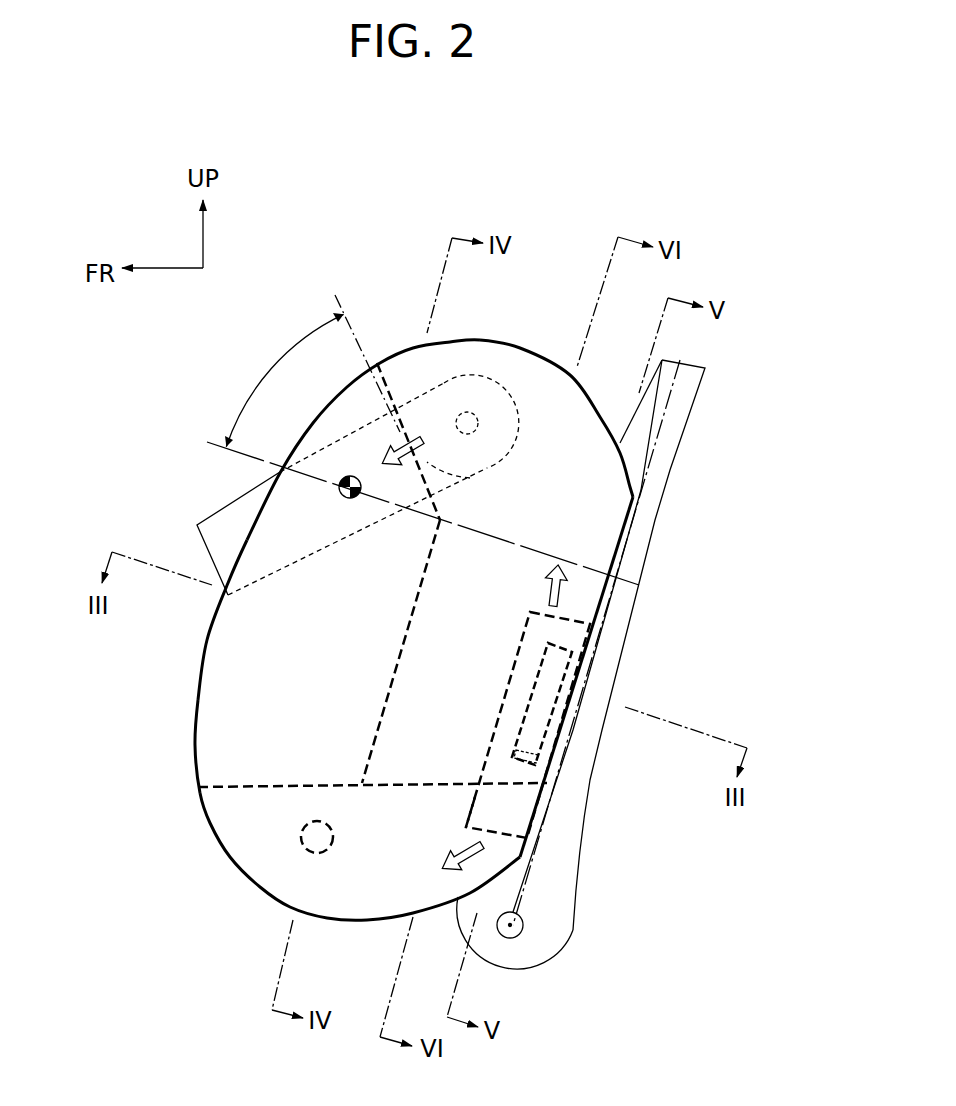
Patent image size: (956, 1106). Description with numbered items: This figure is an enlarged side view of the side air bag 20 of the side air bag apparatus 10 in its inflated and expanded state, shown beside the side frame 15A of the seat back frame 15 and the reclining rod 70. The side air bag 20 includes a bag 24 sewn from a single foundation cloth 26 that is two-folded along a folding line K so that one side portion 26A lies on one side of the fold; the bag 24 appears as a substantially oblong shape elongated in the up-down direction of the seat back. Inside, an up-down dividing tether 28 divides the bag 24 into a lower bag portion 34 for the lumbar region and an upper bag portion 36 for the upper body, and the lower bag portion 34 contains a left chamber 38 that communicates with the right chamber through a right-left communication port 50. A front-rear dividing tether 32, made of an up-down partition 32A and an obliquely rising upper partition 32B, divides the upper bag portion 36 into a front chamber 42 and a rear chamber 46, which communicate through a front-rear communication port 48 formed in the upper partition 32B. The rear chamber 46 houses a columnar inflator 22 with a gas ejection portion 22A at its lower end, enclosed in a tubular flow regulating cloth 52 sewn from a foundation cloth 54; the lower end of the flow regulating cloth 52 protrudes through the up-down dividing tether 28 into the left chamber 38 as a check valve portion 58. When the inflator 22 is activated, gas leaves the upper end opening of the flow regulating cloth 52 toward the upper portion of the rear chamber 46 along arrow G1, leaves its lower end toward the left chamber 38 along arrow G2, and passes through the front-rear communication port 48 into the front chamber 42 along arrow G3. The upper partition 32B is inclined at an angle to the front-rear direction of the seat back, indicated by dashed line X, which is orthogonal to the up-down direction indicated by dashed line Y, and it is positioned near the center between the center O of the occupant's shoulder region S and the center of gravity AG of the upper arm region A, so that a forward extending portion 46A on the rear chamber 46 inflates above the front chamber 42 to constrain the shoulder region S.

The side air bag apparatus 10 is at (307, 252).
The side air bag 20 is at (548, 340).
The inflator 22 is at (568, 713).
The gas ejection portion 22A is at (538, 753).
The bag 24 is at (555, 442).
The foundation cloth 26 is at (563, 418).
The one side portion 26A is at (207, 717).
The up-down dividing tether 28 is at (273, 783).
The front-rear dividing tether 32 is at (423, 577).
The up-down partition 32A is at (397, 653).
The upper partition 32B is at (380, 395).
The lower bag portion 34 is at (280, 880).
The upper bag portion 36 is at (227, 663).
The left chamber 38 is at (353, 893).
The front chamber 42 is at (212, 750).
The rear chamber 46 is at (585, 542).
The forward extending portion 46A is at (413, 380).
The front-rear communication port 48 is at (481, 469).
The right-left communication port 50 is at (300, 840).
The flow regulating cloth 52 is at (502, 700).
The foundation cloth 54 is at (490, 725).
The check valve portion 58 is at (465, 797).
The reclining rod 70 is at (523, 929).
The seat back frame 15 is at (626, 665).
The side frame 15A is at (678, 457).
The upper arm region A is at (193, 538).
The center of gravity AG is at (347, 497).
The dashed line X is at (253, 460).
The dashed line Y is at (668, 408).
The folding line K is at (622, 527).
The center of shoulder region O is at (470, 410).
The shoulder region S is at (500, 380).
The arrow G1 is at (549, 591).
The arrow G2 is at (443, 859).
The arrow G3 is at (387, 453).